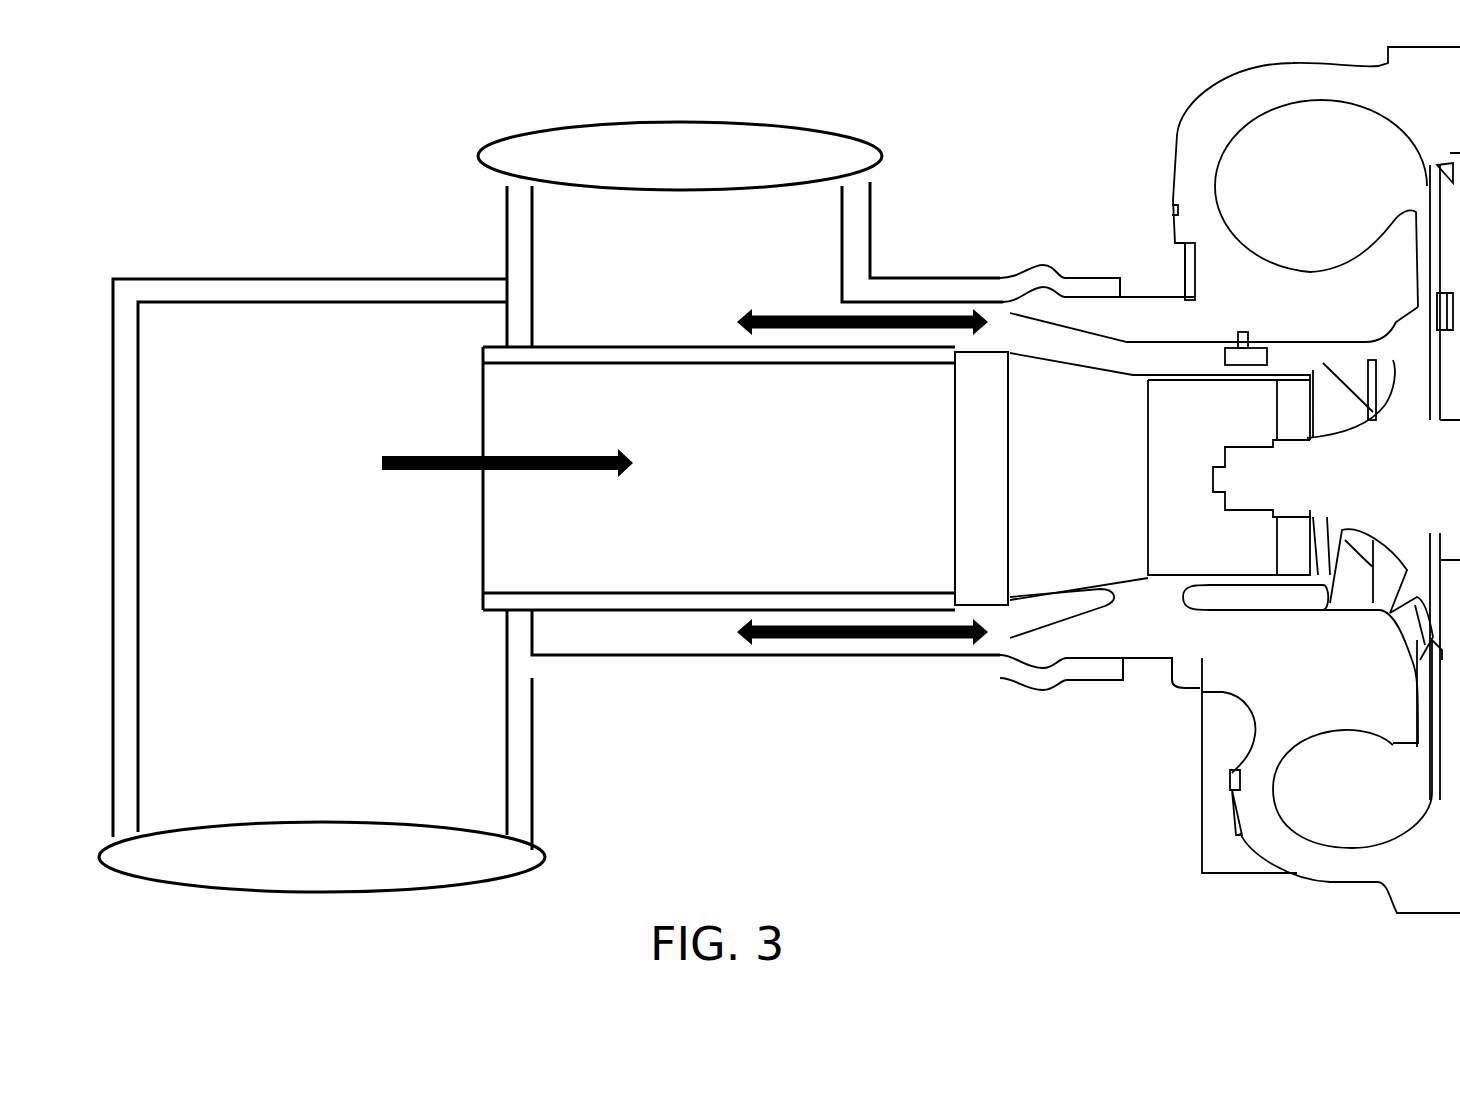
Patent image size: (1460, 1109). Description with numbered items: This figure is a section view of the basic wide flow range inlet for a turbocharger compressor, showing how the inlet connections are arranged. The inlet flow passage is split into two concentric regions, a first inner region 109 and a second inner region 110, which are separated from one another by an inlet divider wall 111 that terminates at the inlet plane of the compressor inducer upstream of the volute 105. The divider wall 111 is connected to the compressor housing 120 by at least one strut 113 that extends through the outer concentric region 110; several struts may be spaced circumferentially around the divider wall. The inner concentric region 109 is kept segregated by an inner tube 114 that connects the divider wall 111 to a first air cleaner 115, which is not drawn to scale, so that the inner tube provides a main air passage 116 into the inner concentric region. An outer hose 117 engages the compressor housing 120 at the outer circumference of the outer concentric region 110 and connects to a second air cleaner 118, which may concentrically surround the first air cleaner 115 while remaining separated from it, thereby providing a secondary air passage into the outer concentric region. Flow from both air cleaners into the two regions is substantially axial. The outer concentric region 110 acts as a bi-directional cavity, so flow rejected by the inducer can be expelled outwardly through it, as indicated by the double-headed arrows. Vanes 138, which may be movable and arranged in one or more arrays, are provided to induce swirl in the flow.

The volute 105 is at (1300, 181).
The first inner region 109 is at (1198, 486).
The second inner region 110 is at (1177, 353).
The inlet divider wall 111 is at (1137, 383).
The strut 113 is at (1157, 597).
The inner tube 114 is at (705, 595).
The first air cleaner 115 is at (358, 892).
The main air passage 116 is at (862, 492).
The outer hose 117 is at (932, 290).
The second air cleaner 118 is at (493, 143).
The compressor housing 120 is at (1163, 305).
The vanes 138 is at (1262, 350).